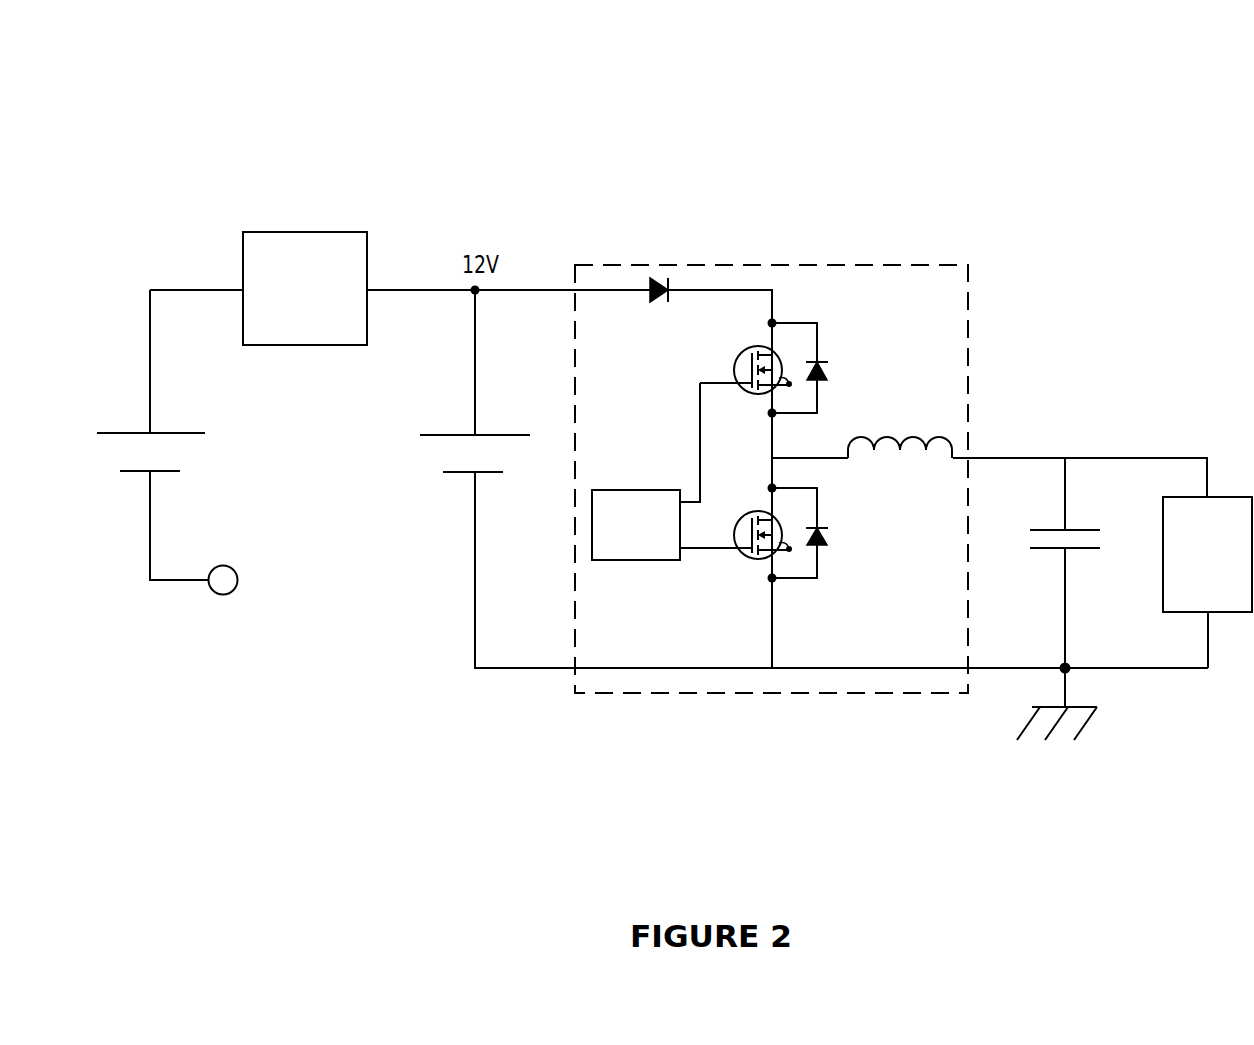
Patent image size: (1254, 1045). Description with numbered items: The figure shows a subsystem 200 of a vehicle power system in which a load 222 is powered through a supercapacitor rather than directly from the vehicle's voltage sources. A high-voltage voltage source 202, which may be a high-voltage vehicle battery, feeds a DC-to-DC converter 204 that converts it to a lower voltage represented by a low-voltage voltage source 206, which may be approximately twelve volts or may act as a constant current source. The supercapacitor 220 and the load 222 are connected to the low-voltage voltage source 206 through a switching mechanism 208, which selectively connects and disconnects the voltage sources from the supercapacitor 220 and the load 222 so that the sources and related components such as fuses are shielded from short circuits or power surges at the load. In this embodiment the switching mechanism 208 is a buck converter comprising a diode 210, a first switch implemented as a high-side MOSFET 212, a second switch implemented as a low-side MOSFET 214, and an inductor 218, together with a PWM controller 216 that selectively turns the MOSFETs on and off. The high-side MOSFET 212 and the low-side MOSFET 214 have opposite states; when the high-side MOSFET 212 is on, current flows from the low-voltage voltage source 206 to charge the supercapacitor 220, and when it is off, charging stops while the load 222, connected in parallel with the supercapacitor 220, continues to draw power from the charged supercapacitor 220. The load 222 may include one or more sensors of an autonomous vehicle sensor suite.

The subsystem 200 is at (146, 72).
The high-voltage voltage source 202 is at (175, 460).
The DC-to-DC converter 204 is at (287, 317).
The low-voltage voltage source 206 is at (455, 453).
The switching mechanism 208 is at (771, 462).
The diode 210 is at (660, 308).
The high-side MOSFET 212 is at (793, 368).
The low-side MOSFET 214 is at (781, 533).
The PWM controller 216 is at (618, 551).
The inductor 218 is at (900, 464).
The supercapacitor 220 is at (1073, 563).
The load 222 is at (1190, 581).